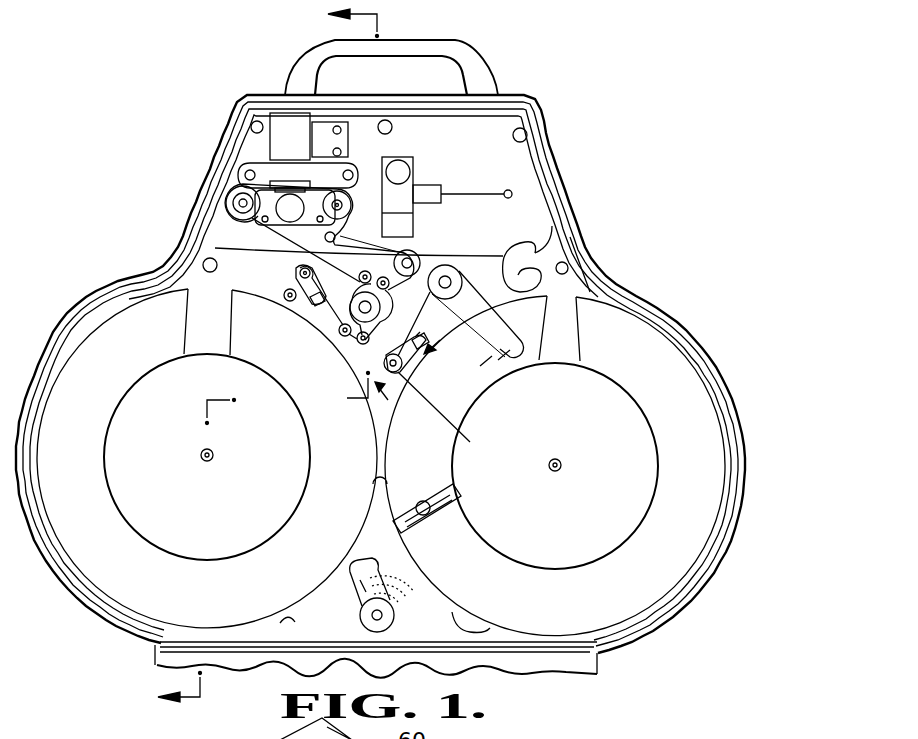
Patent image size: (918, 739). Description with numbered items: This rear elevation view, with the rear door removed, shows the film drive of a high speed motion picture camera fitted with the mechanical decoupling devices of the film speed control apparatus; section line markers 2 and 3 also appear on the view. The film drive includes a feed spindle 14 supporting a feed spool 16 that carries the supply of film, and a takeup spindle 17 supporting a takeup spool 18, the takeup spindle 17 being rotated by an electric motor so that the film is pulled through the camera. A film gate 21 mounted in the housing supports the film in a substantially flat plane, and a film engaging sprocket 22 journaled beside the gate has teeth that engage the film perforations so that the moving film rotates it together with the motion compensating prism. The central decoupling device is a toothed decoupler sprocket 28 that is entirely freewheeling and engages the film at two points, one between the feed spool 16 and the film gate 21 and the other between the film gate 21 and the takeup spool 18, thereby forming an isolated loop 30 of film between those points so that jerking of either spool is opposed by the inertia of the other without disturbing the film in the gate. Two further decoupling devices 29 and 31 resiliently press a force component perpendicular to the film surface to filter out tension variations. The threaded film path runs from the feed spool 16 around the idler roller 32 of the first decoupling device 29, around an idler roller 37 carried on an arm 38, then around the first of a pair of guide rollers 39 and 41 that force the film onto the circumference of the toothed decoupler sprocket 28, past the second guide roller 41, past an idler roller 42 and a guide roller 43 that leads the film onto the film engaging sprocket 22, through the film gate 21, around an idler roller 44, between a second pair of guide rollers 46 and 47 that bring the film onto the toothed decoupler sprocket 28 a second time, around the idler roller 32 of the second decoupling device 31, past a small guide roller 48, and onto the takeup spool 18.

The section line 2- 2 is at (258, 359).
The section line 3- 3 is at (396, 372).
The feed spindle 14 is at (562, 458).
The feed spool 16 is at (618, 382).
The takeup spindle 17 is at (214, 452).
The takeup spool 18 is at (137, 378).
The film gate 21 is at (279, 177).
The film engaging sprocket 22 is at (347, 193).
The toothed decoupler sprocket 28 is at (381, 306).
The decoupling device 29 is at (430, 360).
The isolated loop 30 is at (366, 238).
The decoupling device 31 is at (309, 307).
The idler roller 32 is at (298, 272).
The idler roller 37 is at (463, 278).
The arm 38 is at (493, 330).
The guide roller 39 is at (362, 346).
The guide roller 41 is at (397, 290).
The idler roller 42 is at (413, 257).
The guide roller 43 is at (335, 235).
The idler roller 44 is at (232, 203).
The guide roller 46 is at (359, 276).
The guide roller 47 is at (341, 337).
The small guide roller 48 is at (284, 295).